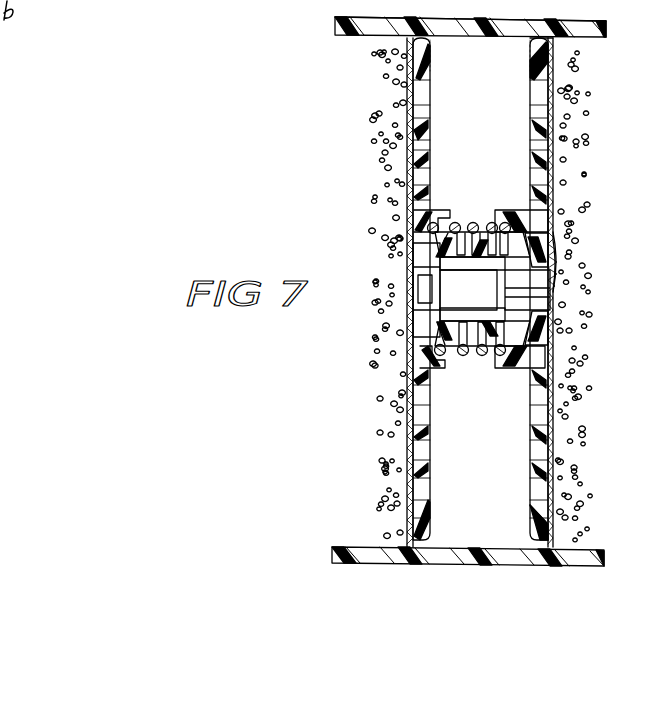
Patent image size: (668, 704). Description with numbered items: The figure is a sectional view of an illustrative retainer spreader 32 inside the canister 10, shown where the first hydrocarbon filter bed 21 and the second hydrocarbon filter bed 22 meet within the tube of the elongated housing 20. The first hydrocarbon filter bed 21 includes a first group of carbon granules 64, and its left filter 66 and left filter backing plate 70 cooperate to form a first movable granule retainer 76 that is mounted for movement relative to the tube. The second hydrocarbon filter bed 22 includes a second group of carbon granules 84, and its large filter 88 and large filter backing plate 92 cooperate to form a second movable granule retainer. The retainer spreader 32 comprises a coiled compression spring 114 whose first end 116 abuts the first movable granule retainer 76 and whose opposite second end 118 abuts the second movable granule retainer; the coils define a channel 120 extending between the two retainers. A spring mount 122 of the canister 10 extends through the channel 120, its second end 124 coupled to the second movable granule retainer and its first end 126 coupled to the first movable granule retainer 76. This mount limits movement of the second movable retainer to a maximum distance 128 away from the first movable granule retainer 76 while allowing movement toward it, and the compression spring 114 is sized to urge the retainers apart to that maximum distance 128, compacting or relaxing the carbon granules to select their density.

The canister 10 is at (582, 15).
The elongated housing 20 is at (430, 18).
The first hydrocarbon filter bed 21 is at (524, 487).
The second hydrocarbon filter bed 22 is at (430, 490).
The retainer spreader 32 is at (418, 282).
The first group of carbon granules 64 is at (563, 362).
The left filter 66 is at (553, 475).
The left filter backing plate 70 is at (526, 522).
The first movable granule retainer 76 is at (544, 19).
The second group of carbon granules 84 is at (383, 437).
The large filter 88 is at (407, 488).
The large filter backing plate 92 is at (430, 508).
The compression spring 114 is at (474, 222).
The first end 116 is at (497, 340).
The second end 118 is at (443, 222).
The channel 120 is at (483, 340).
The spring mount 122 is at (458, 276).
The second end 124 is at (440, 323).
The first end 126 is at (555, 260).
The maximum distance 128 is at (528, 71).